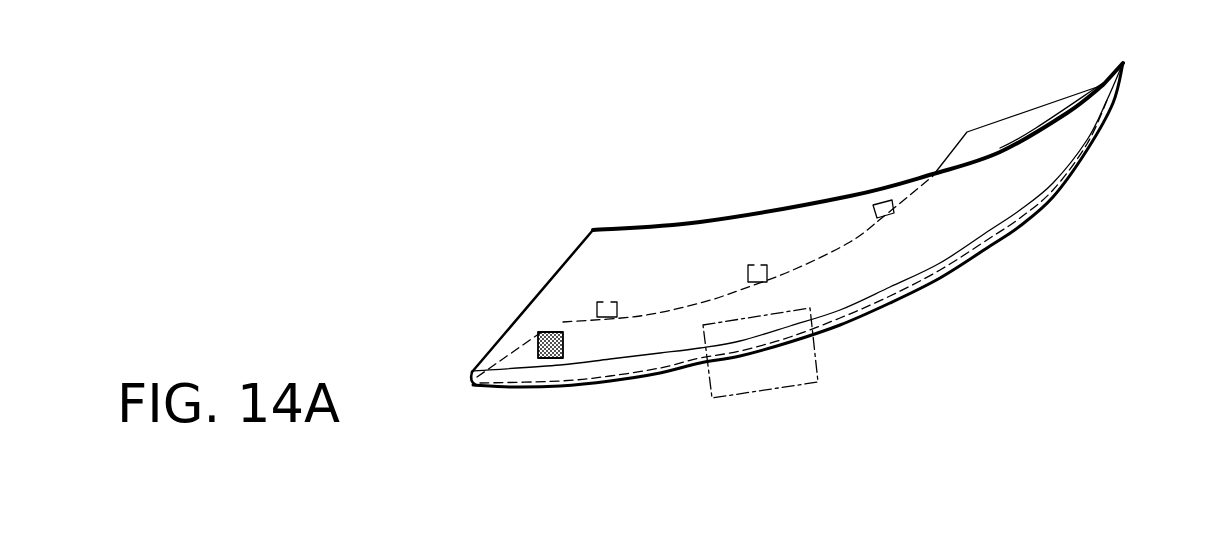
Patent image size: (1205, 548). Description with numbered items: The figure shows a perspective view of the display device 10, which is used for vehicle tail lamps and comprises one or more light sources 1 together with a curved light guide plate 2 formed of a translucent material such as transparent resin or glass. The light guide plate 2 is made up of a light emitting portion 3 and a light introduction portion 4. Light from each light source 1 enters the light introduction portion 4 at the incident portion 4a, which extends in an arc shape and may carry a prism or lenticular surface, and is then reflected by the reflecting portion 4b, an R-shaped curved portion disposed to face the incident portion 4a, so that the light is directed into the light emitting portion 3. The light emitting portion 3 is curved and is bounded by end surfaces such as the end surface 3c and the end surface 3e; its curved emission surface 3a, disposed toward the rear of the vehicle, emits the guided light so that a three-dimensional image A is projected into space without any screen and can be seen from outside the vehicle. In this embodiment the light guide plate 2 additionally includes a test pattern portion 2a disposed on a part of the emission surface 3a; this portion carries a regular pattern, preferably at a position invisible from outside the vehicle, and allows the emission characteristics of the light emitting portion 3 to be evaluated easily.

The display device 10 is at (572, 178).
The light source 1 is at (601, 300).
The light guide plate 2 is at (985, 270).
The test pattern portion 2a is at (550, 355).
The light emitting portion 3 is at (512, 307).
The emission surface 3a is at (923, 250).
The end surface 3c is at (743, 212).
The end surface 3e is at (493, 347).
The light introduction portion 4 is at (1010, 115).
The incident portion 4a is at (667, 307).
The reflecting portion 4b is at (843, 315).
The image A is at (767, 397).